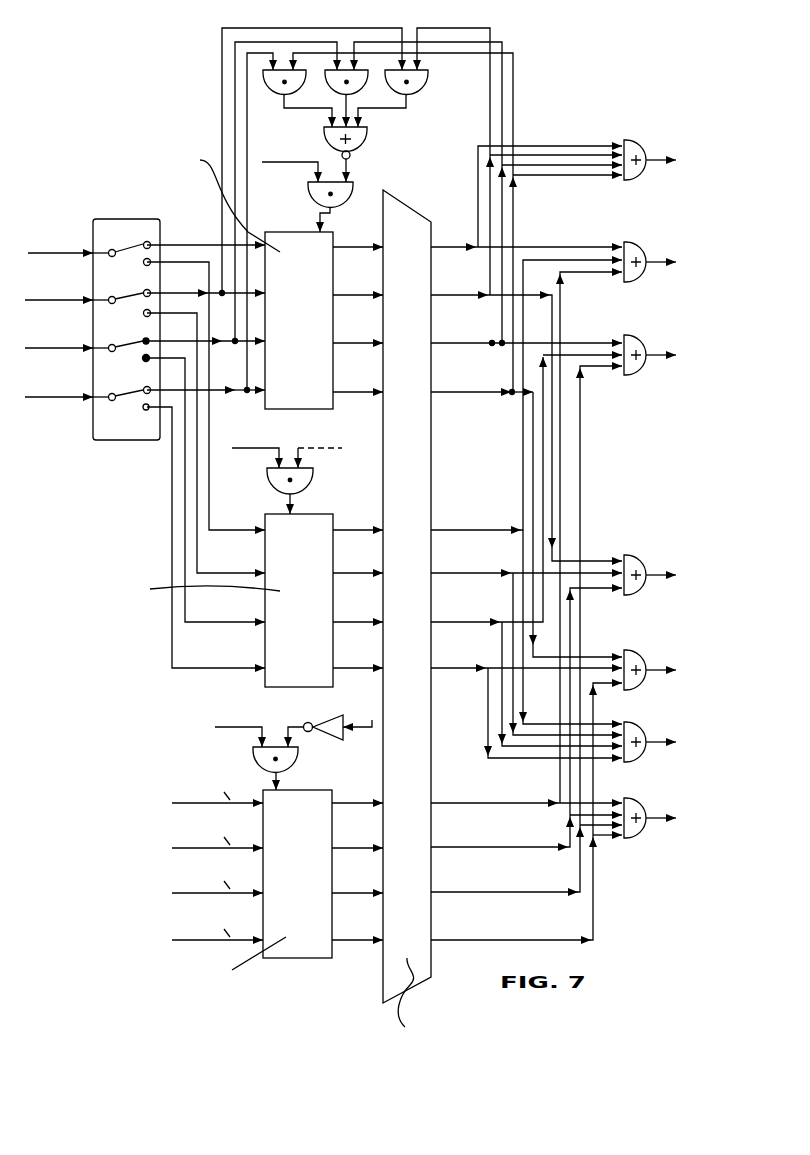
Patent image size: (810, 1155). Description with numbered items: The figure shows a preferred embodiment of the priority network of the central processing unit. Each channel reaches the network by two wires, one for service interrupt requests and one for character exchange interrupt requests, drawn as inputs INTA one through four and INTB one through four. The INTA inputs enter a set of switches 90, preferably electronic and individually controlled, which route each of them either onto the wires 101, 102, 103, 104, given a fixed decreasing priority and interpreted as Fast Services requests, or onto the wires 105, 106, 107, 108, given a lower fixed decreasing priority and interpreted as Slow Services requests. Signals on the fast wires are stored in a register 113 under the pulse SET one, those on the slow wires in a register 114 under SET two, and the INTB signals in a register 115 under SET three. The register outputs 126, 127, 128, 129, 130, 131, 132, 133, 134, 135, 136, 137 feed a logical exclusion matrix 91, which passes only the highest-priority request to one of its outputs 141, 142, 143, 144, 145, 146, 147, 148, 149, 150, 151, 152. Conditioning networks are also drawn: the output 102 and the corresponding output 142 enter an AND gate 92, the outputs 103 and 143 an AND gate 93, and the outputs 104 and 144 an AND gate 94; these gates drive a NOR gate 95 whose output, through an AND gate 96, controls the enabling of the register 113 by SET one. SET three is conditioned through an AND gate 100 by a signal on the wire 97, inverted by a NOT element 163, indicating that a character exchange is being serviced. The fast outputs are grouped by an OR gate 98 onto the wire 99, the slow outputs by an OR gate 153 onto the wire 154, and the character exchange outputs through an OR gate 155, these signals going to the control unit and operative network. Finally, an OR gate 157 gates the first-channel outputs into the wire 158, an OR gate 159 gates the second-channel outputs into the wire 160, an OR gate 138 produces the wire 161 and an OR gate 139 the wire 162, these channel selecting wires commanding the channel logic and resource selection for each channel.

The set of switches 90 is at (128, 219).
The logical exclusion matrix 91 is at (406, 211).
The AND gate 92 is at (418, 91).
The AND gate 93 is at (356, 93).
The AND gate 94 is at (294, 93).
The NOR gate 95 is at (361, 135).
The AND gate 96 is at (316, 194).
The wire 97 is at (357, 714).
The OR gate 98 is at (632, 136).
The wire 99 is at (657, 159).
The AND gate 100 is at (260, 761).
The wire 101 is at (207, 239).
The wire 102 is at (198, 292).
The wire 103 is at (208, 344).
The wire 104 is at (208, 393).
The wire 105 is at (214, 517).
The wire 106 is at (212, 560).
The wire 107 is at (212, 608).
The wire 108 is at (212, 654).
The register 113 is at (326, 412).
The register 114 is at (272, 690).
The register 115 is at (297, 960).
The register output 126 is at (373, 248).
The register output 127 is at (373, 296).
The register output 128 is at (373, 344).
The register output 129 is at (373, 393).
The register output 130 is at (373, 531).
The register output 131 is at (373, 574).
The register output 132 is at (373, 623).
The register output 133 is at (373, 669).
The register output 134 is at (373, 804).
The register output 135 is at (373, 849).
The register output 136 is at (373, 894).
The register output 137 is at (373, 941).
The OR gate 138 is at (640, 331).
The OR gate 139 is at (654, 651).
The exclusion matrix output 141 is at (474, 248).
The exclusion matrix output 142 is at (474, 296).
The exclusion matrix output 143 is at (474, 344).
The exclusion matrix output 144 is at (474, 393).
The exclusion matrix output 145 is at (474, 531).
The exclusion matrix output 146 is at (474, 574).
The exclusion matrix output 147 is at (474, 623).
The exclusion matrix output 148 is at (474, 669).
The exclusion matrix output 149 is at (474, 804).
The exclusion matrix output 150 is at (474, 848).
The exclusion matrix output 151 is at (474, 893).
The exclusion matrix output 152 is at (474, 941).
The OR gate 153 is at (657, 743).
The wire 154 is at (636, 758).
The OR gate 155 is at (630, 839).
The OR gate 157 is at (640, 237).
The wire 158 is at (657, 263).
The OR gate 159 is at (644, 548).
The wire 160 is at (657, 576).
The wire 161 is at (657, 356).
The wire 162 is at (657, 671).
The NOT element 163 is at (331, 742).